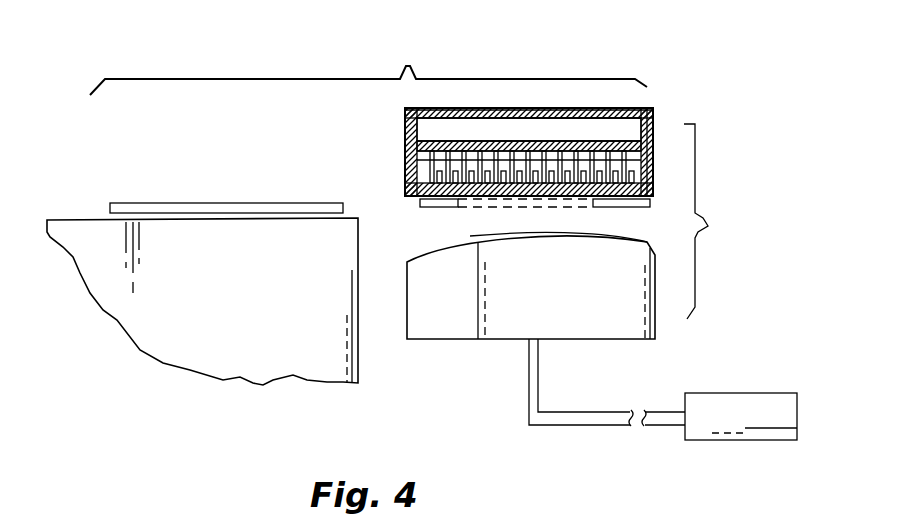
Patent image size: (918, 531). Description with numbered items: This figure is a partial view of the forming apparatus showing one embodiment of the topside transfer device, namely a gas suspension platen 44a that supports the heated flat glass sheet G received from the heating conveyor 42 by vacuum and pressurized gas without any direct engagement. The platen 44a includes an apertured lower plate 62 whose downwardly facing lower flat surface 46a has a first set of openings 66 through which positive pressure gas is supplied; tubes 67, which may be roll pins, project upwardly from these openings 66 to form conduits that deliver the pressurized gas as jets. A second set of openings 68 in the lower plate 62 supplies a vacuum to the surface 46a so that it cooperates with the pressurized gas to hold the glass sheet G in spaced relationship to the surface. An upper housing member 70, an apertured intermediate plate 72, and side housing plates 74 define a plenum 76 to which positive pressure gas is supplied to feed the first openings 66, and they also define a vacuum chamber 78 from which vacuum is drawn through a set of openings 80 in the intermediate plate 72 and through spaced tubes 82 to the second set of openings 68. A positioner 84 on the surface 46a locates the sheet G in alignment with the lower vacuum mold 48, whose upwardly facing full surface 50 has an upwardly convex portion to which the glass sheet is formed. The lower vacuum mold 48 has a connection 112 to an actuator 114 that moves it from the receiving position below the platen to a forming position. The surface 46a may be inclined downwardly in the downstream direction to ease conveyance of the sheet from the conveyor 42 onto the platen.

The heating conveyor 42 is at (118, 320).
The gas suspension platen 44a is at (402, 125).
The lower flat surface 46a is at (415, 207).
The lower vacuum mold 48 is at (655, 310).
The full surface 50 is at (650, 242).
The apertured lower plate 62 is at (405, 186).
The first set of openings 66 is at (465, 211).
The tubes 67 is at (596, 175).
The second set of openings 68 is at (472, 175).
The upper housing member 70 is at (620, 110).
The apertured intermediate plate 72 is at (648, 123).
The side housing plates 74 is at (410, 152).
The plenum 76 is at (556, 130).
The vacuum chamber 78 is at (501, 145).
The set of openings 80 is at (451, 160).
The spaced tubes 82 is at (430, 118).
The positioner 84 is at (655, 197).
The connection 112 is at (640, 428).
The actuator 114 is at (755, 422).
The glass sheet G is at (138, 203).